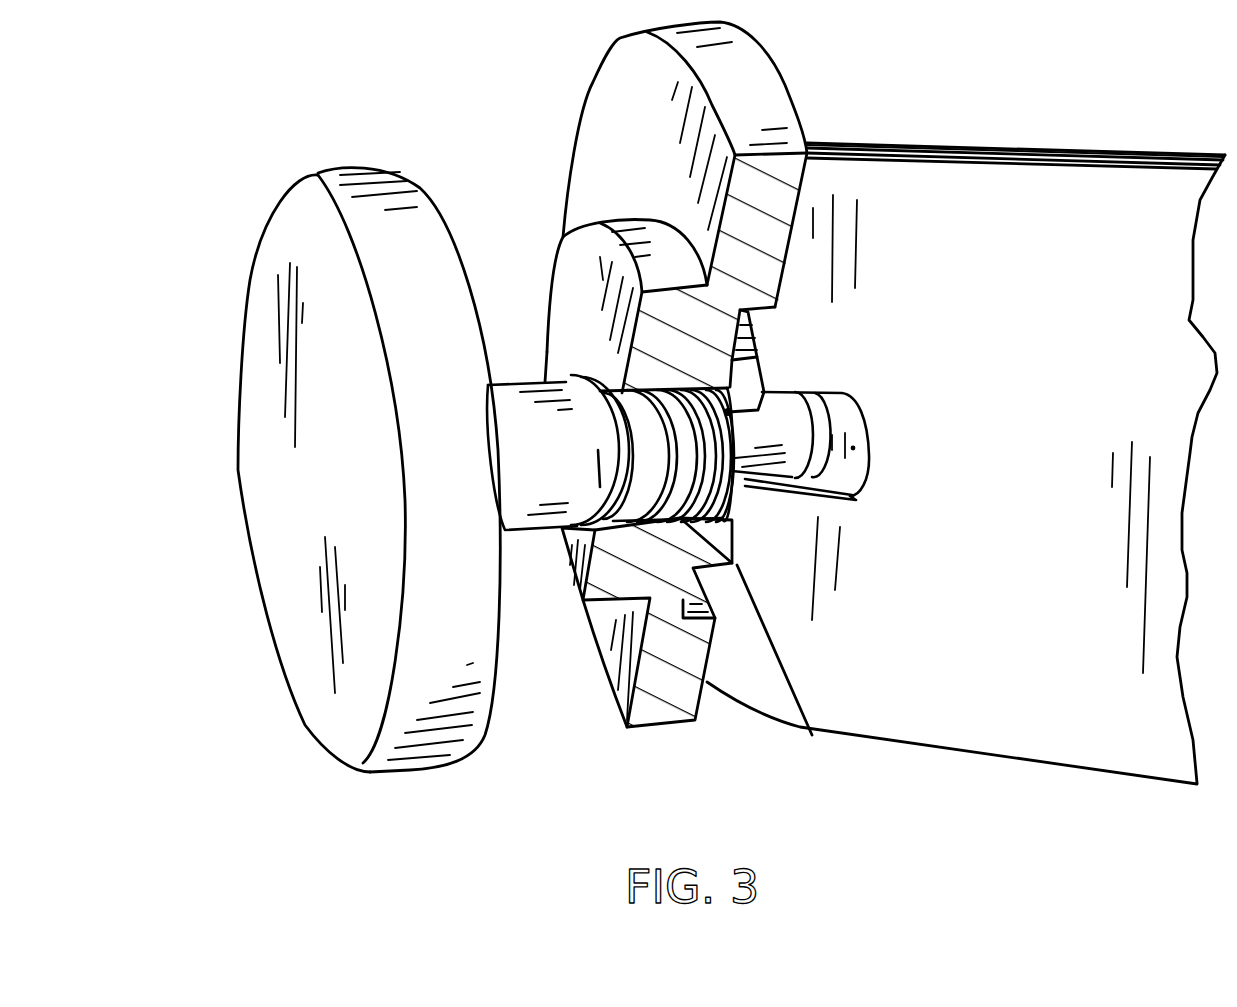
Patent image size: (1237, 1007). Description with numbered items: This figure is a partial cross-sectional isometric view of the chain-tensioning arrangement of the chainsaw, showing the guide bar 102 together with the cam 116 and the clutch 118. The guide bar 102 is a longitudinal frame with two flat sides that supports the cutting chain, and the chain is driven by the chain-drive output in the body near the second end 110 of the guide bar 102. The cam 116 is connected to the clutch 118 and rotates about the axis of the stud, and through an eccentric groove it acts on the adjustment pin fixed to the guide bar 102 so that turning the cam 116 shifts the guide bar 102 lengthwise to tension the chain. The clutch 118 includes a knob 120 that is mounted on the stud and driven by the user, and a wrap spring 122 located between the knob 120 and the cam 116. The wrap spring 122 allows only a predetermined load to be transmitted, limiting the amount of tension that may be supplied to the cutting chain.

The guide bar 102 is at (993, 187).
The second end 110 is at (867, 203).
The cam 116 is at (755, 88).
The clutch 118 is at (302, 658).
The knob 120 is at (337, 180).
The wrap spring 122 is at (667, 467).